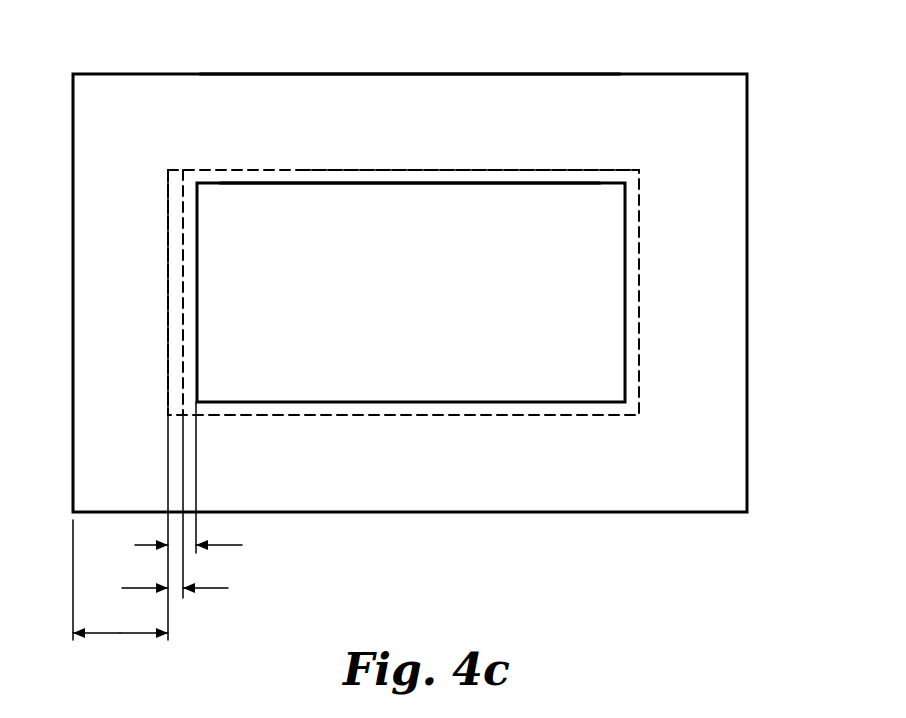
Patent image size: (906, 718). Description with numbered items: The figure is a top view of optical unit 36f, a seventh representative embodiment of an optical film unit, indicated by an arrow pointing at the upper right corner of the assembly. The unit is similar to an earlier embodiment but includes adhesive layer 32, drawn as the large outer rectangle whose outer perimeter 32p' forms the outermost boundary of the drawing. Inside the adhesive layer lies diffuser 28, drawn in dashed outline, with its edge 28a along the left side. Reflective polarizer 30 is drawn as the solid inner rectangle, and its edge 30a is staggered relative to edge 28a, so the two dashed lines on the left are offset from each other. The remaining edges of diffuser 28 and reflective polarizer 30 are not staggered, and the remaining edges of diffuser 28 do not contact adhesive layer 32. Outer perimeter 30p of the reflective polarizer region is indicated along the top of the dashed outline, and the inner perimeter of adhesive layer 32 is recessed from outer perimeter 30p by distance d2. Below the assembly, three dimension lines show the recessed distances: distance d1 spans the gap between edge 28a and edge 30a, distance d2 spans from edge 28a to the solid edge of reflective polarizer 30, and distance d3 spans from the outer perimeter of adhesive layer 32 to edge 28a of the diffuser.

The adhesive layer 32 is at (80, 170).
The outer perimeter of adhesive layer 32p' is at (410, 45).
The optical unit 36f is at (734, 57).
The diffuser 28 is at (174, 238).
The edge of diffuser 28a is at (167, 287).
The edge of reflective polarizer 30a is at (182, 337).
The reflective polarizer 30 is at (194, 380).
The outer perimeter 30p is at (497, 168).
The recessed distance d1 is at (216, 590).
The recessed distance d2 is at (232, 547).
The recessed distance d3 is at (120, 636).